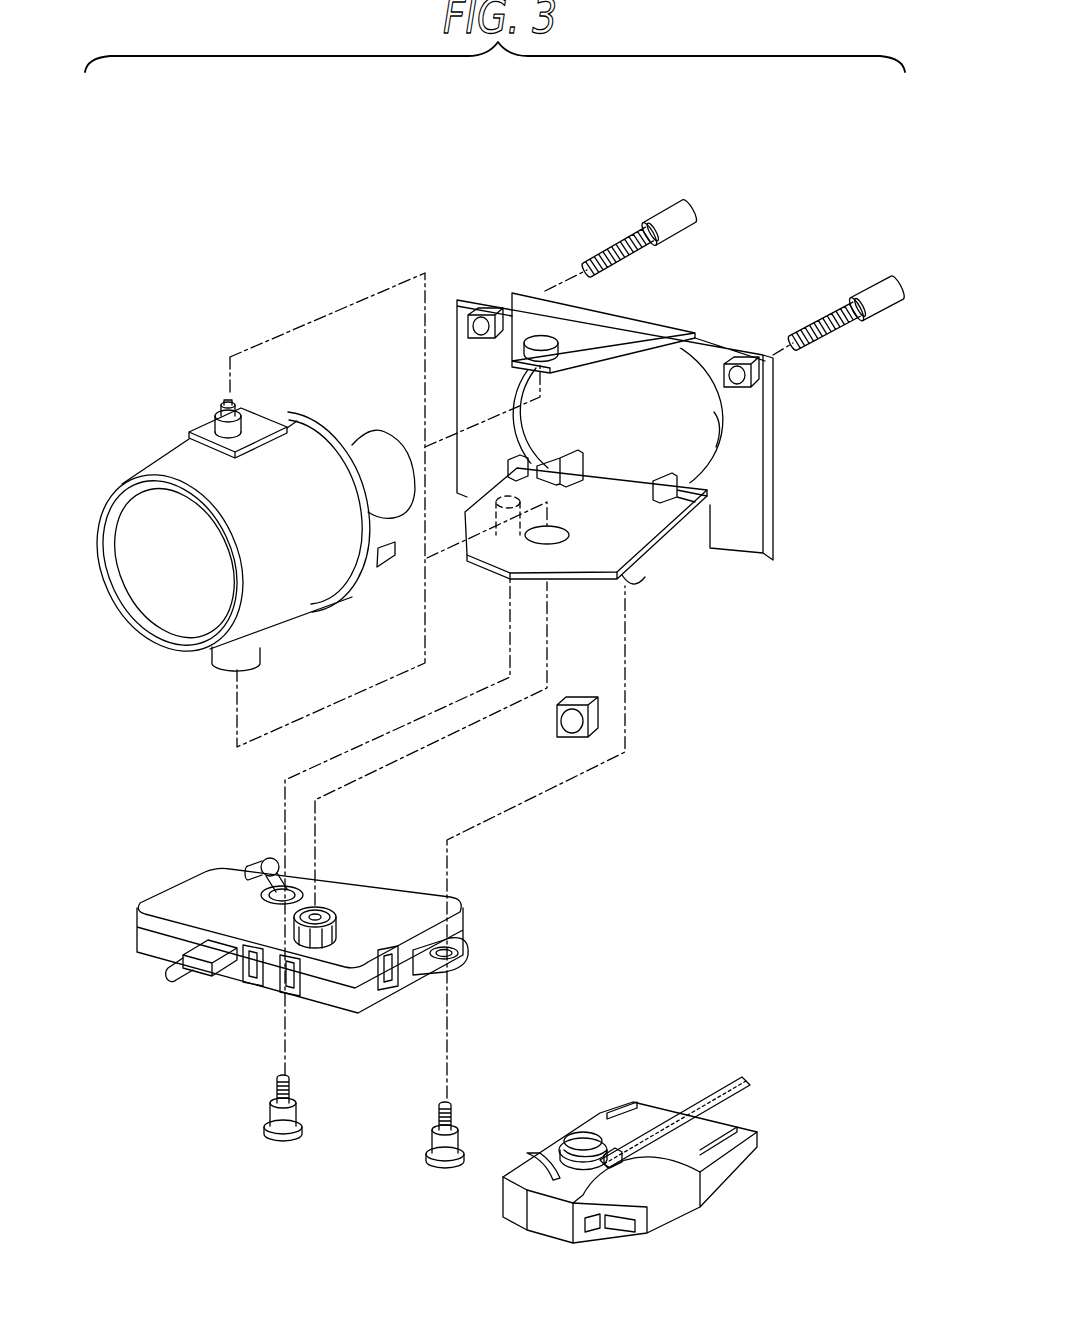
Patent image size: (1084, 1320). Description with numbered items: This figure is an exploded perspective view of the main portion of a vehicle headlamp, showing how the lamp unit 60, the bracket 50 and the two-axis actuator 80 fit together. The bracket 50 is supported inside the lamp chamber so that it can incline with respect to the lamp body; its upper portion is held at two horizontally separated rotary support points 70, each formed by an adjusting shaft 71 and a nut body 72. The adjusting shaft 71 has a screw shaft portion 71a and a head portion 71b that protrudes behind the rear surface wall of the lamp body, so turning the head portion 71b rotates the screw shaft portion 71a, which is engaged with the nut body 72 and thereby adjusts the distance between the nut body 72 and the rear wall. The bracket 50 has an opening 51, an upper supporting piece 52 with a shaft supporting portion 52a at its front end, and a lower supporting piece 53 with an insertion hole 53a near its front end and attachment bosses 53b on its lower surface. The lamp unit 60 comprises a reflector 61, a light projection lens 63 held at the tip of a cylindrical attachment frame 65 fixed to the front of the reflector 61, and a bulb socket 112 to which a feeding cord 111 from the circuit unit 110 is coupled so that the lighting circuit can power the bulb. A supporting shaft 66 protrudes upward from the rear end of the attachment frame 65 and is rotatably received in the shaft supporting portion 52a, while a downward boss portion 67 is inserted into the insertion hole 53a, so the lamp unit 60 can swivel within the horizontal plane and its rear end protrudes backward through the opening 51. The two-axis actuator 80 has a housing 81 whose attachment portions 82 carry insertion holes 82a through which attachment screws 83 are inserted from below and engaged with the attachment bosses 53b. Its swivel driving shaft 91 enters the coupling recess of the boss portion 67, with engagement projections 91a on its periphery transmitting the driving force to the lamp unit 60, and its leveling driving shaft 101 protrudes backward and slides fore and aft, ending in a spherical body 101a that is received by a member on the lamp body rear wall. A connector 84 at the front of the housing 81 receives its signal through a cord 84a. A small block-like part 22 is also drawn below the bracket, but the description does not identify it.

The nut 22 is at (597, 718).
The bracket 50 is at (514, 298).
The opening 51 is at (718, 425).
The upper supporting piece 52 is at (643, 340).
The shaft supporting portion 52a is at (552, 330).
The lower supporting piece 53 is at (660, 527).
The insertion hole 53a is at (560, 522).
The attachment boss 53b is at (500, 543).
The lamp unit 60 is at (178, 412).
The reflector 61 is at (333, 432).
The light projection lens 63 is at (170, 635).
The attachment frame 65 is at (300, 597).
The supporting shaft 66 is at (232, 403).
The boss portion 67 is at (255, 656).
The rotary support point 70 is at (604, 226).
The adjusting shaft 71 is at (649, 226).
The screw shaft portion 71a is at (633, 253).
The head portion 71b is at (686, 224).
The nut body 72 is at (480, 318).
The two-axis actuator 80 is at (463, 908).
The housing 81 is at (408, 890).
The attachment portion 82 is at (282, 892).
The insertion hole 82a is at (292, 886).
The attachment screw 83 is at (278, 1090).
The connector 84 is at (226, 978).
The cord 84a is at (170, 975).
The swivel driving shaft 91 is at (327, 942).
The engagement projection 91a is at (300, 940).
The leveling driving shaft 101 is at (248, 870).
The spherical body 101a is at (262, 860).
The circuit unit 110 is at (760, 1160).
The feeding cord 111 is at (723, 1083).
The bulb socket 112 is at (406, 512).